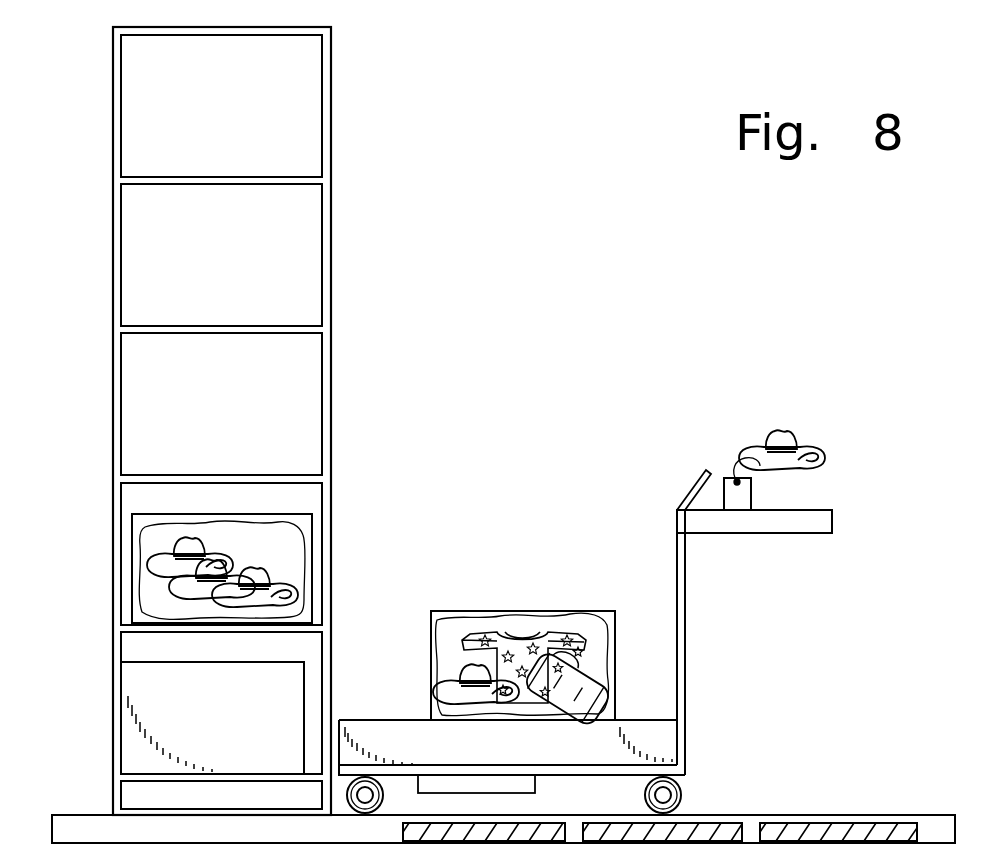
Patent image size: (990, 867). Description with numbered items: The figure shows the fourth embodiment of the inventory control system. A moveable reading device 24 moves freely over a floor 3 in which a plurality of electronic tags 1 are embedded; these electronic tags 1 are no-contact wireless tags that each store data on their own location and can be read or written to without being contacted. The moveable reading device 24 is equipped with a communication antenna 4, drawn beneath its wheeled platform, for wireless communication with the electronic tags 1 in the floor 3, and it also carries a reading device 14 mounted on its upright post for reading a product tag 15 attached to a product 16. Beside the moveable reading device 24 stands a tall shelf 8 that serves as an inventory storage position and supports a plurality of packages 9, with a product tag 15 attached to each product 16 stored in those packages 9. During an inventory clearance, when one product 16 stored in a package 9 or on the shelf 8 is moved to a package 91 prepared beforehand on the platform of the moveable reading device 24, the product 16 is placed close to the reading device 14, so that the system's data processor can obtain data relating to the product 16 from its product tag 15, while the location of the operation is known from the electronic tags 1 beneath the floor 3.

The electronic tag 1 is at (857, 830).
The floor 3 is at (937, 814).
The communication antenna 4 is at (437, 787).
The shelf 8 is at (331, 125).
The package 9 is at (312, 525).
The package 91 is at (514, 610).
The reading device 14 is at (790, 534).
The product tag 15 is at (728, 477).
The product 16 is at (818, 447).
The moveable reading device 24 is at (676, 556).